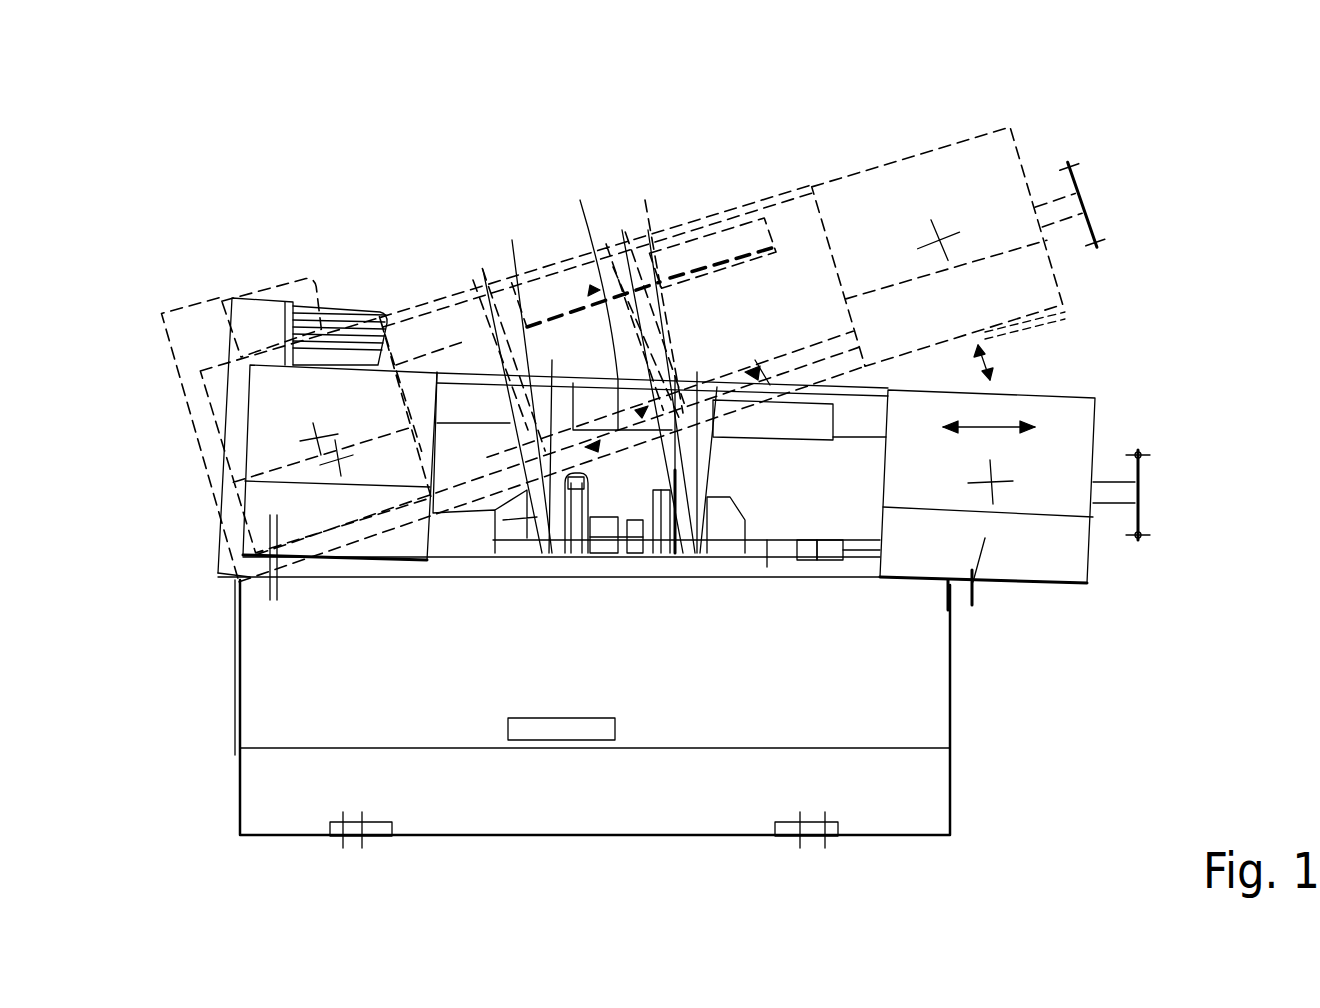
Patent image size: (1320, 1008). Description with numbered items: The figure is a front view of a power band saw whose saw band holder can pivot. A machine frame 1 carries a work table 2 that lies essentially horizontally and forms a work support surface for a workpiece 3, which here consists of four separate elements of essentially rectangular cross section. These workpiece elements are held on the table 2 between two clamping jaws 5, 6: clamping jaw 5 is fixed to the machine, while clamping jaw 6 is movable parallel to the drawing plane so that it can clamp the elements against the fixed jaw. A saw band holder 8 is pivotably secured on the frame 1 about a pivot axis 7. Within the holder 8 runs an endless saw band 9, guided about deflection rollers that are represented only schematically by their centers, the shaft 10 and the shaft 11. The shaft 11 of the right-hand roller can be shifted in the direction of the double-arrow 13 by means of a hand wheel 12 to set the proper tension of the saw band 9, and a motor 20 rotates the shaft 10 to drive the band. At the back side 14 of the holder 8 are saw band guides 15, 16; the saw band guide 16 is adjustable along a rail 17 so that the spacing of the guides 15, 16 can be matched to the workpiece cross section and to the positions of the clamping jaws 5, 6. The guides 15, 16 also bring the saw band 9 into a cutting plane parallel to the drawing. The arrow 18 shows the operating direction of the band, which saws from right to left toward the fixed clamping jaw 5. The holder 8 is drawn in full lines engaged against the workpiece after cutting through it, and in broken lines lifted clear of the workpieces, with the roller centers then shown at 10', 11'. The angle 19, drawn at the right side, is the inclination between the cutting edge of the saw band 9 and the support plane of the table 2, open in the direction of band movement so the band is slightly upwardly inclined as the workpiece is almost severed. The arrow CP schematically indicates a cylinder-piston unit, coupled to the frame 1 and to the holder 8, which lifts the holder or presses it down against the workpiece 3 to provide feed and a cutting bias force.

The machine frame 1 is at (577, 782).
The work table 2 is at (493, 573).
The workpiece 3 is at (638, 573).
The clamping jaw 5 is at (572, 573).
The clamping jaw 6 is at (668, 565).
The pivot axis 7 is at (268, 545).
The saw band holder 8 is at (868, 167).
The saw band 9 is at (758, 360).
The shaft 10 is at (221, 456).
The deflection roller center 10' is at (201, 418).
The shaft 11 is at (1117, 538).
The deflection roller center 11' is at (984, 168).
The hand wheel 12 is at (1143, 468).
The double-arrow 13 is at (1000, 423).
The back side 14 is at (450, 337).
The saw band guide 15 is at (512, 318).
The saw band guide 16 is at (645, 285).
The rail 17 is at (717, 243).
The arrow 18 is at (607, 316).
The angle 19 is at (975, 592).
The motor 20 is at (352, 320).
The arrow CP is at (992, 353).